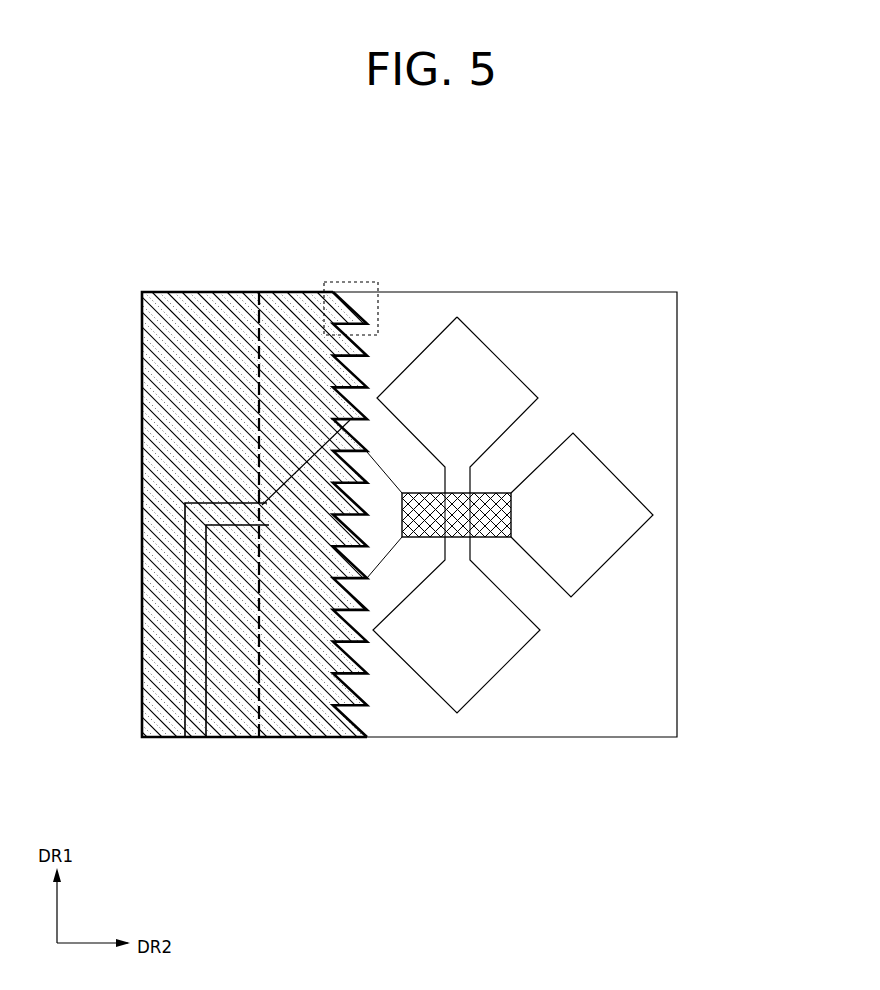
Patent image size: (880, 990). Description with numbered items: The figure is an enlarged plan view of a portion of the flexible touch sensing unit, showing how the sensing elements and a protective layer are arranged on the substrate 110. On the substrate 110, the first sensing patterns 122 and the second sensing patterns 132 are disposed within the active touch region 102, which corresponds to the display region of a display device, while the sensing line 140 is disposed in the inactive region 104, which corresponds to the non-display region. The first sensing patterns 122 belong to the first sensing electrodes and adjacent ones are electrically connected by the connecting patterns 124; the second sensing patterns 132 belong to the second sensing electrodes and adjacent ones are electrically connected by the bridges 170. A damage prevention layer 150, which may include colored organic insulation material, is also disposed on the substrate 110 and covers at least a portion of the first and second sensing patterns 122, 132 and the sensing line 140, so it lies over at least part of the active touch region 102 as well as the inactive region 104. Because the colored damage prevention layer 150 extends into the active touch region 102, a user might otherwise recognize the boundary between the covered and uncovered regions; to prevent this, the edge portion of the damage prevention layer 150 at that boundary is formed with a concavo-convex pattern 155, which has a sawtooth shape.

The active touch region 102 is at (545, 305).
The inactive region 104 is at (200, 304).
The substrate 110 is at (677, 675).
The first sensing patterns 122 is at (497, 380).
The connecting patterns 124 is at (490, 514).
The second sensing patterns 132 is at (585, 565).
The sensing line 140 is at (185, 633).
The damage prevention layer 150 is at (155, 413).
The concavo-convex pattern 155 is at (350, 281).
The bridges 170 is at (420, 535).